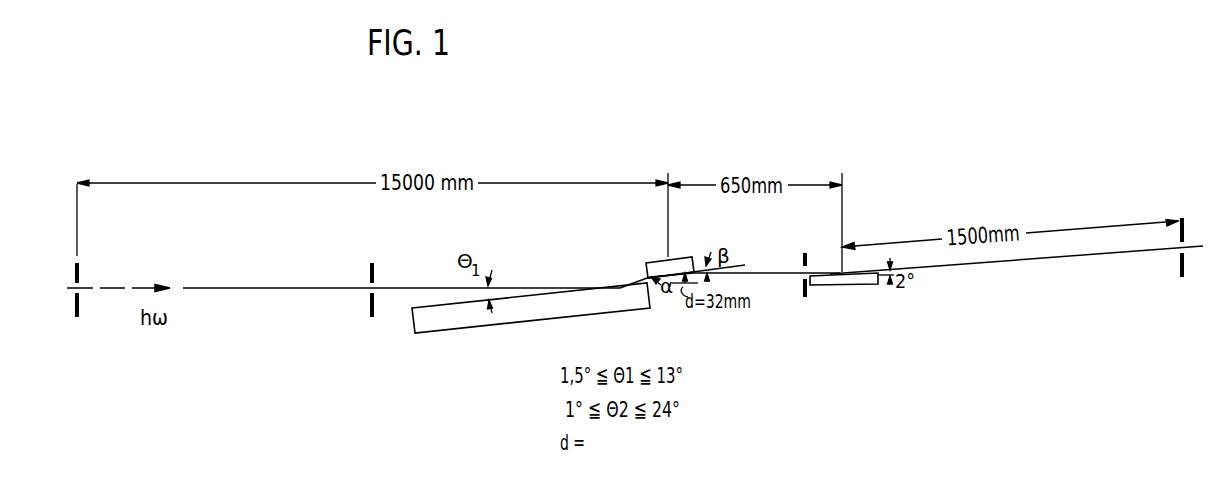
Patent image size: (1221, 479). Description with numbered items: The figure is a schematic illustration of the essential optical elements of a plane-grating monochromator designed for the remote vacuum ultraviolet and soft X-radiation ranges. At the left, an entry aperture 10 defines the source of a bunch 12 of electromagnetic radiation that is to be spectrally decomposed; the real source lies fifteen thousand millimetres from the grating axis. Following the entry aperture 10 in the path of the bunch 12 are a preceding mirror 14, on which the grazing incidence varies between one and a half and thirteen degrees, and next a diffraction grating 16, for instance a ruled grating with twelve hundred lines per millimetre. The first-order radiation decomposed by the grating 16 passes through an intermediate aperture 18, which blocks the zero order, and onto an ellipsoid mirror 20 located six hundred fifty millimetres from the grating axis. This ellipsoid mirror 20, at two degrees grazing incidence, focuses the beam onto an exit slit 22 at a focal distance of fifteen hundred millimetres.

The entry aperture 10 is at (78, 276).
The bunch of electromagnetic radiation 12 is at (227, 290).
The preceding mirror 14 is at (428, 326).
The diffraction grating 16 is at (660, 265).
The intermediate aperture 18 is at (808, 292).
The ellipsoid mirror 20 is at (848, 285).
The exit slit 22 is at (1182, 236).